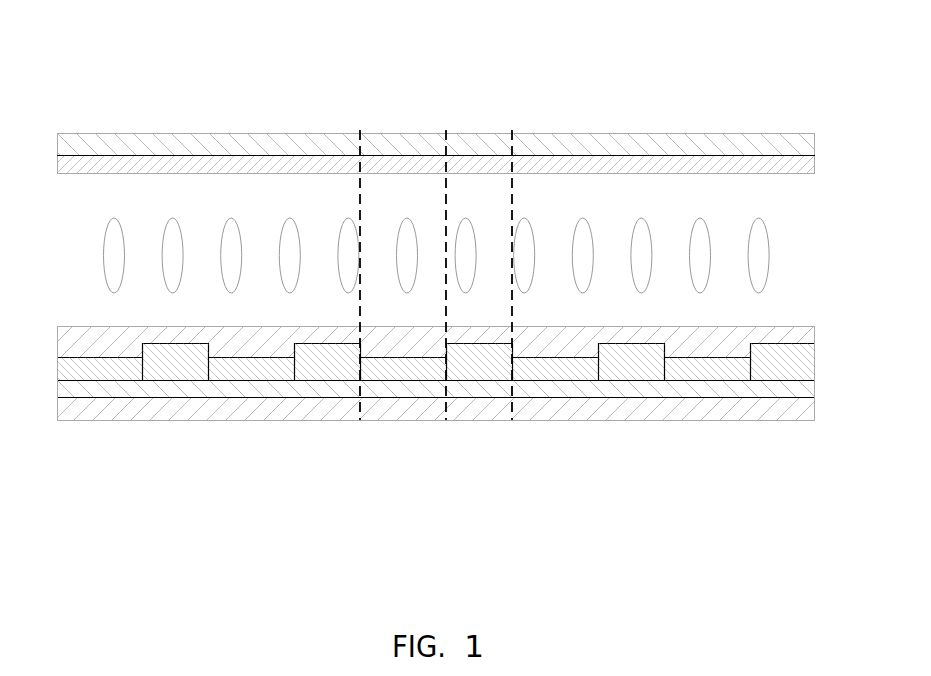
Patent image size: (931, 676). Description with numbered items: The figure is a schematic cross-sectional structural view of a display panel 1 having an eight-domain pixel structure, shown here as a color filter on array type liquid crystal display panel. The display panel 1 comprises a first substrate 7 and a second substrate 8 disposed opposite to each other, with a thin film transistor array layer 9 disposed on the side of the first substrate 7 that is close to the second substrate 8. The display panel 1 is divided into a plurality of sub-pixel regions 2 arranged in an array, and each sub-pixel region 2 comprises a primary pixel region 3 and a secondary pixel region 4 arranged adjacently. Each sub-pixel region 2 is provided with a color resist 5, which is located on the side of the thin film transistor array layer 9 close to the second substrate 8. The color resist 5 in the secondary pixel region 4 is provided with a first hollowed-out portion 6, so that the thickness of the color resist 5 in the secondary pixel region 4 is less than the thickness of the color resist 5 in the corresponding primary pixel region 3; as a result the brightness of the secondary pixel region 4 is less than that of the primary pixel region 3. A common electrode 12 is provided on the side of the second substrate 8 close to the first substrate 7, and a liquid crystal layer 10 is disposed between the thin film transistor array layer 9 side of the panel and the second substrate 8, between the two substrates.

The display panel 1 is at (210, 430).
The sub-pixel region 2 is at (400, 73).
The primary pixel region 3 is at (446, 130).
The secondary pixel region 4 is at (360, 130).
The color resist 5 is at (455, 367).
The first hollowed-out portion 6 is at (385, 357).
The first substrate 7 is at (282, 408).
The second substrate 8 is at (666, 140).
The thin film transistor (TFT) array layer 9 is at (329, 390).
The liquid crystal layer 10 is at (586, 265).
The common electrode 12 is at (745, 162).